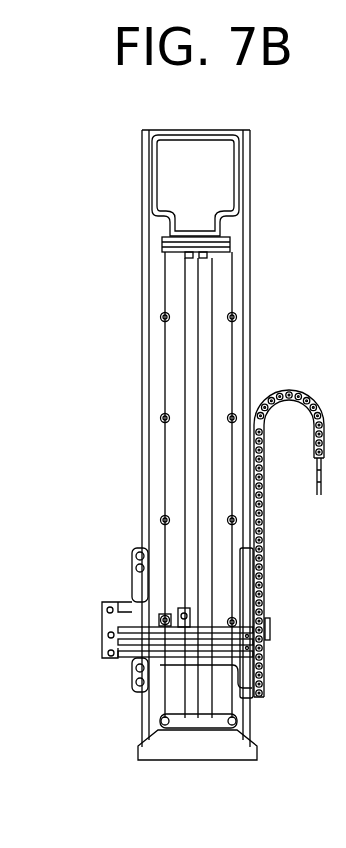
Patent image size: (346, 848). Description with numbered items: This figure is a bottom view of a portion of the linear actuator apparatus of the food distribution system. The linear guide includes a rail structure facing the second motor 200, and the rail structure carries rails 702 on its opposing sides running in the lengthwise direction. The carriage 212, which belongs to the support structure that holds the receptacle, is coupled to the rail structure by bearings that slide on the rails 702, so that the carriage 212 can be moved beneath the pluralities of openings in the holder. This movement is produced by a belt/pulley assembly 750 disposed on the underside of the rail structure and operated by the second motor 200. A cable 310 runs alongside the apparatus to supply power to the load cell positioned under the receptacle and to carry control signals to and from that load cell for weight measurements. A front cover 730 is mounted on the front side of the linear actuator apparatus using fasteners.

The second motor 200 is at (222, 172).
The rails 702 is at (142, 285).
The belt/pulley assembly 750 is at (249, 338).
The cable 310 is at (265, 558).
The carriage 212 is at (130, 657).
The front cover 730 is at (247, 753).